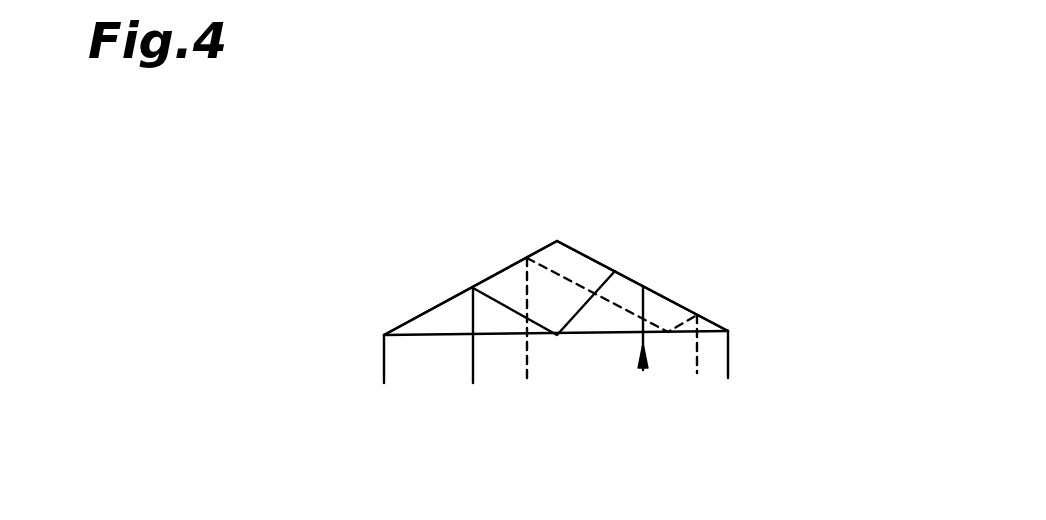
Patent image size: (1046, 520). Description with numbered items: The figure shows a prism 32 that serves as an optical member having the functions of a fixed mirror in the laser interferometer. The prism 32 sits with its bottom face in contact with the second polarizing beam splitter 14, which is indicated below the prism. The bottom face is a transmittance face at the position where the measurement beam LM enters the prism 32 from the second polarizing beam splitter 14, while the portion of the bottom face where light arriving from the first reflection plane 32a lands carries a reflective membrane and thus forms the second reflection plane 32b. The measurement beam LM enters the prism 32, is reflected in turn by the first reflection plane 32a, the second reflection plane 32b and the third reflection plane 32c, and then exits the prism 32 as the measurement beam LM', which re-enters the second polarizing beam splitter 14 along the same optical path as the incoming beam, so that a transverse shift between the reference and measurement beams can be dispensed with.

The prism 32 is at (608, 282).
The first reflection plane 32a is at (662, 296).
The second reflection plane 32b is at (577, 333).
The third reflection plane 32c is at (442, 303).
The second polarizing beam splitter 14 is at (717, 358).
The measurement beam LM is at (587, 384).
The measurement beam LM' is at (665, 363).